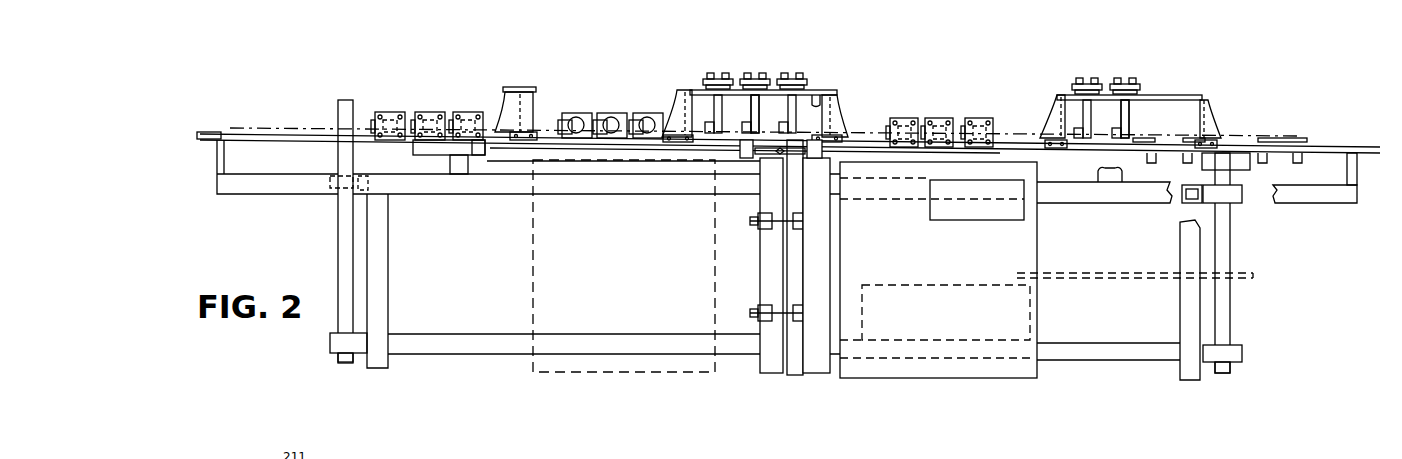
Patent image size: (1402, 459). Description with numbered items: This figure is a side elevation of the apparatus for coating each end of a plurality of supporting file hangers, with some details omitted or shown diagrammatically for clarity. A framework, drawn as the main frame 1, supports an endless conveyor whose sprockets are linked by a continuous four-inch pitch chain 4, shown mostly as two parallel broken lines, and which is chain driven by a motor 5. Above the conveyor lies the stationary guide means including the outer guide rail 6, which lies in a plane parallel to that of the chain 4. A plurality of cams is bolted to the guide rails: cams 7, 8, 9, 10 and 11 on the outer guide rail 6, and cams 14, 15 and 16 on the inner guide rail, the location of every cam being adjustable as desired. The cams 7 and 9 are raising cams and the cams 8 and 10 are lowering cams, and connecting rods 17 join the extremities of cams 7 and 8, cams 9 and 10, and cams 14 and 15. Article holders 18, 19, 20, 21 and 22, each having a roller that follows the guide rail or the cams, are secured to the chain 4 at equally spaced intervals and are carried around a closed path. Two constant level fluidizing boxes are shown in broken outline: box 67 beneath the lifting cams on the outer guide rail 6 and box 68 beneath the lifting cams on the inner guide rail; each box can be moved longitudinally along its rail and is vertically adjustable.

The machine frame 1 is at (373, 227).
The chain 4 is at (285, 128).
The motor 5 is at (980, 330).
The outer guide rail 6 is at (205, 133).
The cam 7 is at (1206, 112).
The cam 8 is at (1050, 108).
The cam 9 is at (815, 95).
The cam 10 is at (670, 108).
The cam 11 is at (537, 99).
The cam 14 is at (838, 106).
The cam 15 is at (697, 105).
The cam 16 is at (516, 104).
The connecting rods 17 is at (733, 85).
The article holder 18 is at (1128, 110).
The article holder 19 is at (932, 122).
The article holder 20 is at (758, 105).
The article holder 21 is at (620, 115).
The article holder 22 is at (384, 112).
The constant level fluidizing box 67 is at (838, 312).
The constant level fluidizing box 68 is at (532, 318).